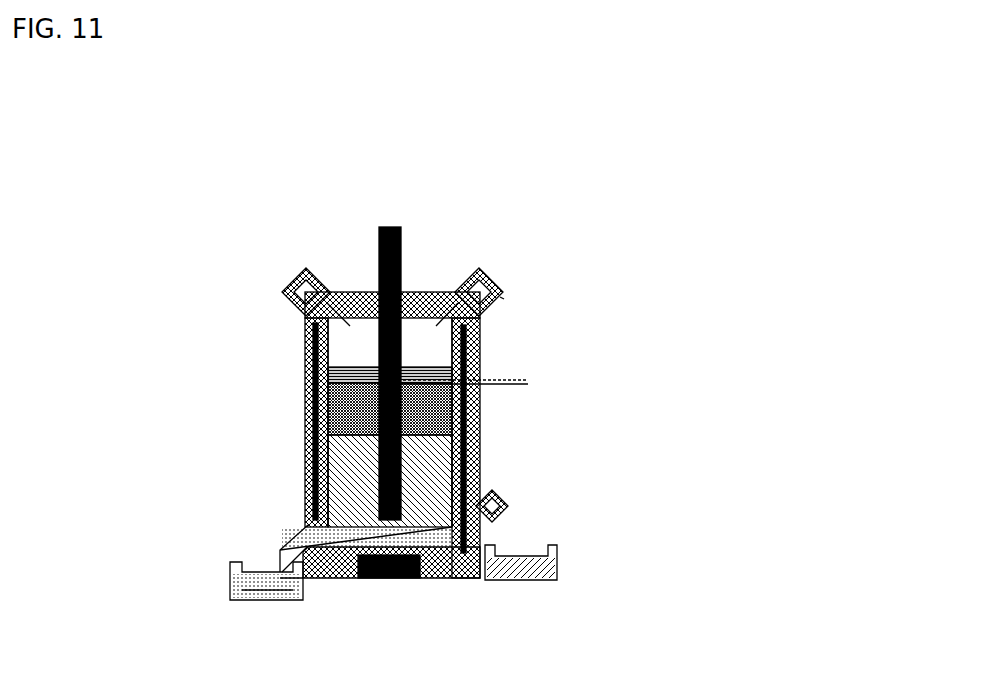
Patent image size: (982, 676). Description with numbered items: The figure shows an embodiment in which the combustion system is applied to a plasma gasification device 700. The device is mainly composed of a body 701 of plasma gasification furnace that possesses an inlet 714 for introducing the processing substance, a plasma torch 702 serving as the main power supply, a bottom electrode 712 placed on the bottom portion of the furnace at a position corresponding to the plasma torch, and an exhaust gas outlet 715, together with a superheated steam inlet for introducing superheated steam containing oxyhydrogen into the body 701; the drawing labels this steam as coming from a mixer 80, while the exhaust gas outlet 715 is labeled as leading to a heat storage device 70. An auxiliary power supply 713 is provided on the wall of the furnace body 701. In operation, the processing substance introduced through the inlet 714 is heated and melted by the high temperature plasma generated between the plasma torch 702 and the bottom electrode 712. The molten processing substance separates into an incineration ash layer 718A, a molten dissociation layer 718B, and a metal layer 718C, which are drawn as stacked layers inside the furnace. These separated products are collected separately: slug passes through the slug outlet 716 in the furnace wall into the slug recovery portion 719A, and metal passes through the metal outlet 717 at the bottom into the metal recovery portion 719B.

The plasma gasification device 700 is at (472, 158).
The body of plasma gasification furnace 701 is at (437, 262).
The plasma torch 702 is at (381, 228).
The bottom electrode 712 is at (382, 582).
The auxiliary power supply 713 is at (310, 345).
The inlet 714 is at (293, 284).
The exhaust gas outlet 715 is at (488, 282).
The slug outlet 716 is at (559, 506).
The metal outlet 717 is at (337, 533).
The incineration ash layer 718A is at (315, 370).
The molten dissociation layer 718B is at (318, 410).
The metal layer 718C is at (318, 447).
The slug recovery portion 719A is at (557, 575).
The metal recovery portion 719B is at (245, 597).
The heat storage device 70 is at (624, 298).
The mixer 80 is at (641, 391).